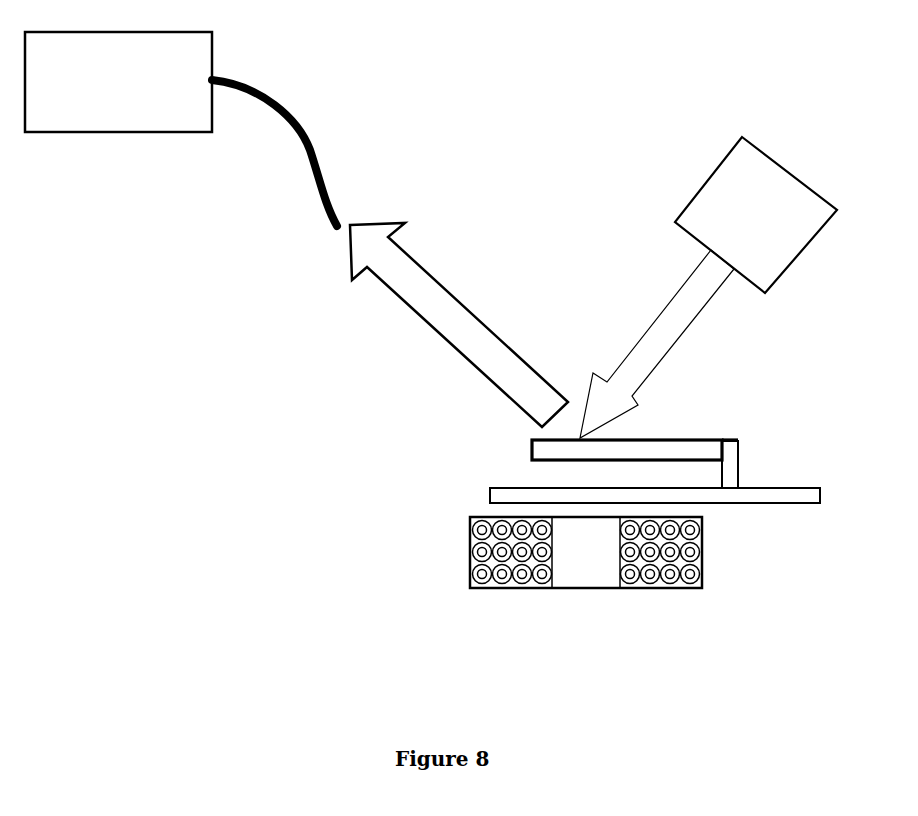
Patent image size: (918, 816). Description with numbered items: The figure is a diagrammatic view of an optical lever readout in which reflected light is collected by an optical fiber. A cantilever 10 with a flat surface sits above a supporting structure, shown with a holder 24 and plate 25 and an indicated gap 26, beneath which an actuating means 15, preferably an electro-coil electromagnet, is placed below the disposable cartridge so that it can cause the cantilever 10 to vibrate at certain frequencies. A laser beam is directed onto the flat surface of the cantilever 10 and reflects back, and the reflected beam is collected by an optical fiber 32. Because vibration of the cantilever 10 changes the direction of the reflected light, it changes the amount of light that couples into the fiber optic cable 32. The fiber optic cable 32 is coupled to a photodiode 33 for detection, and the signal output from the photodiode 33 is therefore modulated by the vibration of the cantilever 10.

The cantilever 10 is at (528, 447).
The actuating means 15 is at (585, 589).
The sample holder 24 is at (542, 464).
The support plate 25 is at (800, 497).
The gap between sample holder and plate 26 is at (703, 476).
The optical fiber 32 is at (290, 137).
The photodiode 33 is at (98, 134).